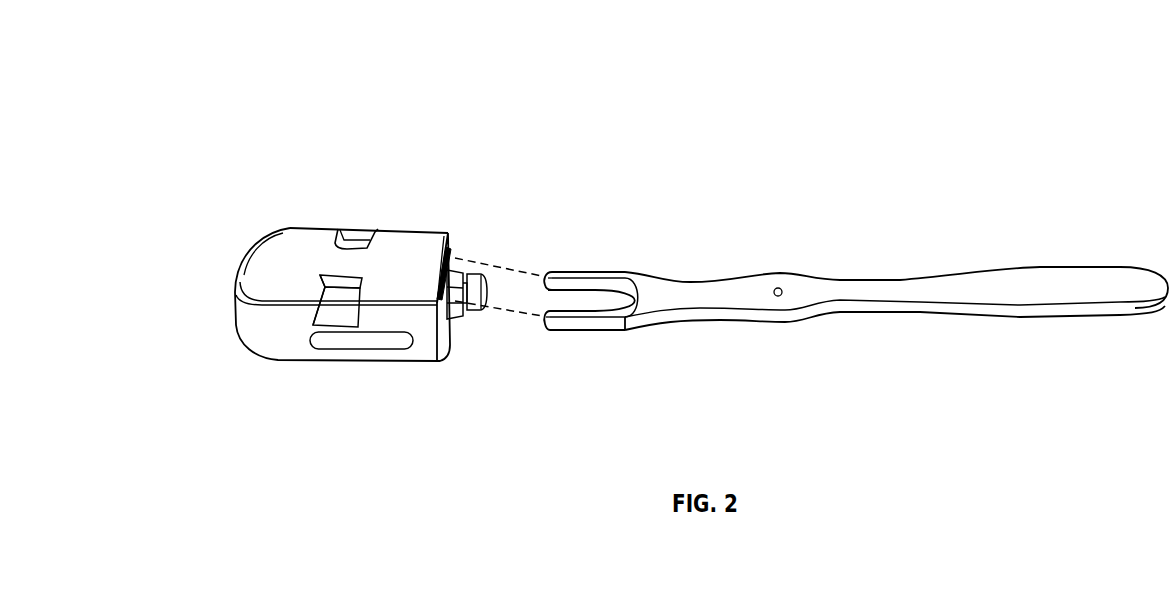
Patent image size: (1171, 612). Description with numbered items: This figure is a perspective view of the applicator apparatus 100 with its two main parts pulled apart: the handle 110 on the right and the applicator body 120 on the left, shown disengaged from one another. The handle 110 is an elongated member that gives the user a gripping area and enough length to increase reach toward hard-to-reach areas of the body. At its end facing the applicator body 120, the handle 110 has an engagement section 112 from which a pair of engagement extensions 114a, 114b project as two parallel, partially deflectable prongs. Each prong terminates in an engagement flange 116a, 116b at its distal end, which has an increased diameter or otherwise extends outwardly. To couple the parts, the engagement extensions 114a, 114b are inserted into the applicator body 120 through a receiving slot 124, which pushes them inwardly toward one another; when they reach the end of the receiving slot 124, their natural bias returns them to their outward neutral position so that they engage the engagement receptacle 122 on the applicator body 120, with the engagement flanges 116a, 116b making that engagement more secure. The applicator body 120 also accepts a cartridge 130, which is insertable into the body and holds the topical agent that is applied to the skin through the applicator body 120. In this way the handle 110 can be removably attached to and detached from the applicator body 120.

The applicator apparatus 100 is at (794, 58).
The handle 110 is at (1037, 224).
The engagement section 112 is at (652, 281).
The engagement extension 114a is at (602, 279).
The engagement extension 114b is at (600, 323).
The engagement flange 116a is at (573, 248).
The engagement flange 116b is at (550, 318).
The applicator body 120 is at (320, 181).
The engagement receptacle 122 is at (360, 236).
The receiving slot 124 is at (456, 262).
The cartridge 130 is at (455, 323).